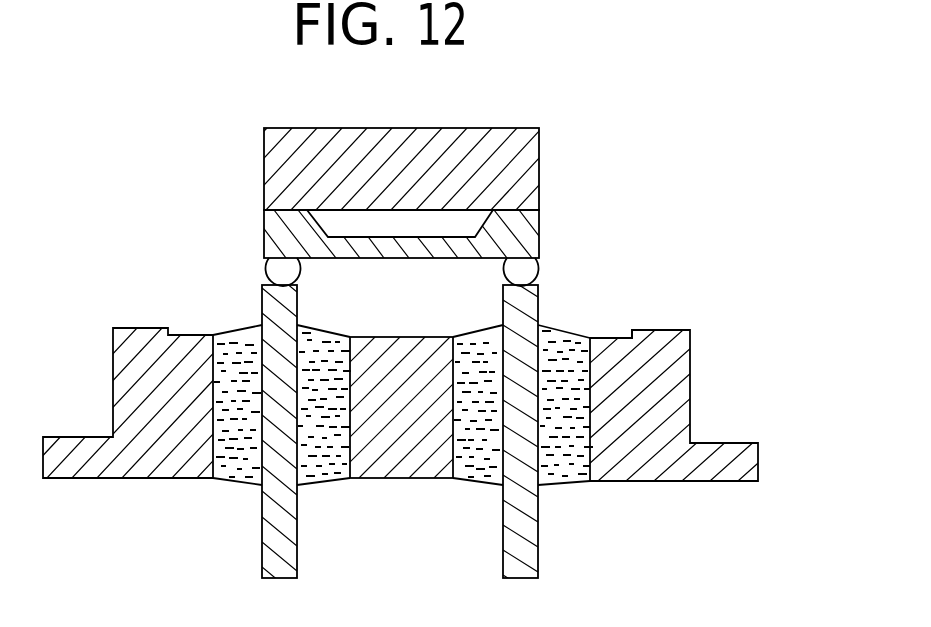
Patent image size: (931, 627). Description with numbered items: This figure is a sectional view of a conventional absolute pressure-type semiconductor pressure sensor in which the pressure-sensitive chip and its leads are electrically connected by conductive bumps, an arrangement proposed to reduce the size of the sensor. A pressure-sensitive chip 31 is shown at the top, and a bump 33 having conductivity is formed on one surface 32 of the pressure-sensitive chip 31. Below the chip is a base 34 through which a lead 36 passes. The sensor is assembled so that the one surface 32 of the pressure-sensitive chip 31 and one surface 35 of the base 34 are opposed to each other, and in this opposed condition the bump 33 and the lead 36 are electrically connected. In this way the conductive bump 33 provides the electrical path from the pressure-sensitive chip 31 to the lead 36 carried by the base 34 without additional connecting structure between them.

The pressure-sensitive chip 31 is at (530, 227).
The one surface 32 is at (537, 300).
The bump 33 is at (540, 263).
The base 34 is at (687, 386).
The one surface 35 is at (618, 338).
The lead 36 is at (532, 537).